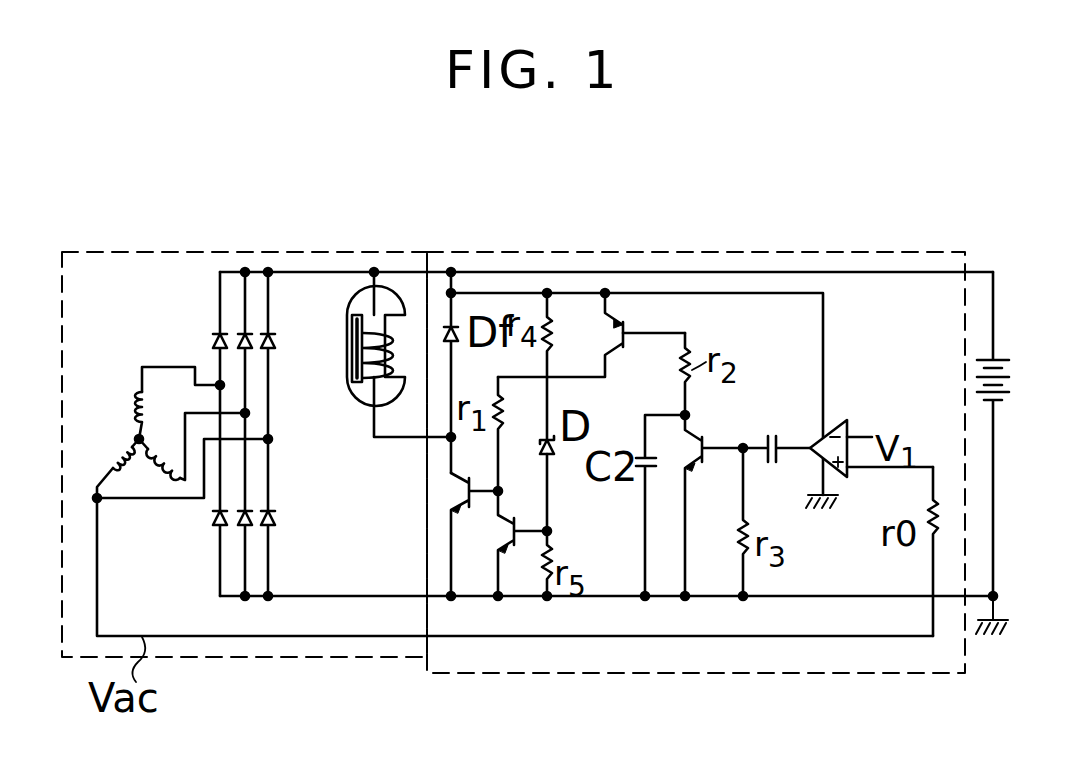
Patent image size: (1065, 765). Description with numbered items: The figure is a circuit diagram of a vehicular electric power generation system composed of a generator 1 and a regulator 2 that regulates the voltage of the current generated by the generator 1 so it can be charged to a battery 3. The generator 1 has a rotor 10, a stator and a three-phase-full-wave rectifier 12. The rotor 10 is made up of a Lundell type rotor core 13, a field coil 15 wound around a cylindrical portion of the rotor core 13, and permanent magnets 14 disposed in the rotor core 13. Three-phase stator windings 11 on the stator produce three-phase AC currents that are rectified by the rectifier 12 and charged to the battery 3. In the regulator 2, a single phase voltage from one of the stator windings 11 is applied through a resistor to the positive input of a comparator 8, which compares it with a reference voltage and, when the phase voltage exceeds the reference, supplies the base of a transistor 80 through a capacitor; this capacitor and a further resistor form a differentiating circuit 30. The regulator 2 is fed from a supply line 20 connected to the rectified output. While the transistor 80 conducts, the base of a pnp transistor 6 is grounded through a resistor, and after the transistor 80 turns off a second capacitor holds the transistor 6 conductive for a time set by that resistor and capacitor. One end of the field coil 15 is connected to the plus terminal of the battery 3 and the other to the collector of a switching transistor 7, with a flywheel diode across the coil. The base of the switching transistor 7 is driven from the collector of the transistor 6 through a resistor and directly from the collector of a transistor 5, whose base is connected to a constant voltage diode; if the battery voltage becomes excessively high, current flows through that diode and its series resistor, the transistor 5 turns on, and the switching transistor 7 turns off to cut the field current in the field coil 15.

The generator 1 is at (210, 657).
The regulator 2 is at (835, 673).
The battery 3 is at (1011, 385).
The transistor 5 is at (505, 530).
The pnp transistor 6 is at (612, 338).
The switching transistor 7 is at (466, 478).
The comparator 8 is at (845, 426).
The rotor 10 is at (367, 383).
The three-phase stator windings 11 is at (113, 455).
The three-phase-full-wave rectifier 12 is at (207, 346).
The Lundell type rotor core 13 is at (347, 299).
The permanent magnets 14 is at (380, 374).
The field coil 15 is at (352, 350).
The power supply line of control circuit 20 is at (532, 290).
The differentiating circuit 30 is at (771, 502).
The transistor 80 is at (696, 470).